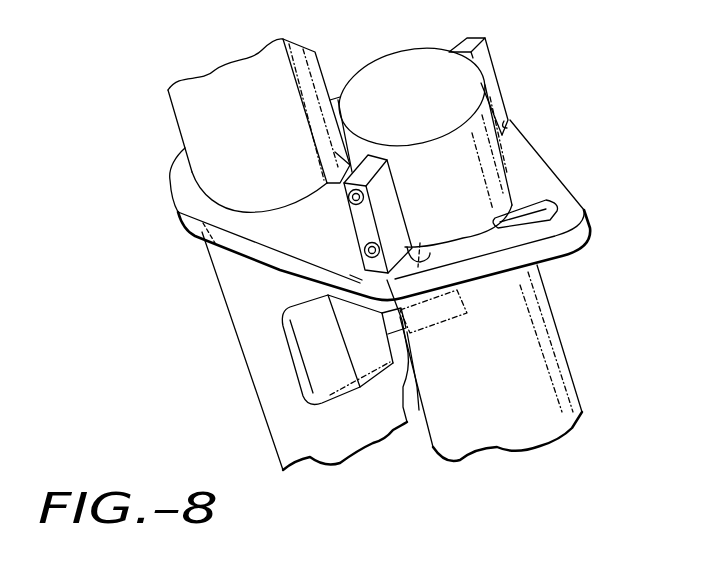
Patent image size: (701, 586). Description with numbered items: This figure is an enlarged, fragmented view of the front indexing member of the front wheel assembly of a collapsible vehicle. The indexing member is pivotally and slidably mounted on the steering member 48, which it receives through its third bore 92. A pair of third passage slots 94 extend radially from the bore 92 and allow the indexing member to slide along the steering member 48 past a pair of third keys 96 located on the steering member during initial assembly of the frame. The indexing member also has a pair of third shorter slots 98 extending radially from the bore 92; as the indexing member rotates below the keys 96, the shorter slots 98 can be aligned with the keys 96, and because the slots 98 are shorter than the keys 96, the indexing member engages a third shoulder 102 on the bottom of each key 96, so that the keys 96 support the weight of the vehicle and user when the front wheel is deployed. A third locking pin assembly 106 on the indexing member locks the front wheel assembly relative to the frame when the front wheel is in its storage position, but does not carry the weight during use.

The steering member 48 is at (477, 391).
The third bore 92 is at (470, 223).
The third passage slots 94 is at (530, 201).
The third keys 96 is at (490, 72).
The third shorter slots 98 is at (508, 131).
The third shoulder 102 is at (356, 279).
The third locking pin assembly 106 is at (337, 368).